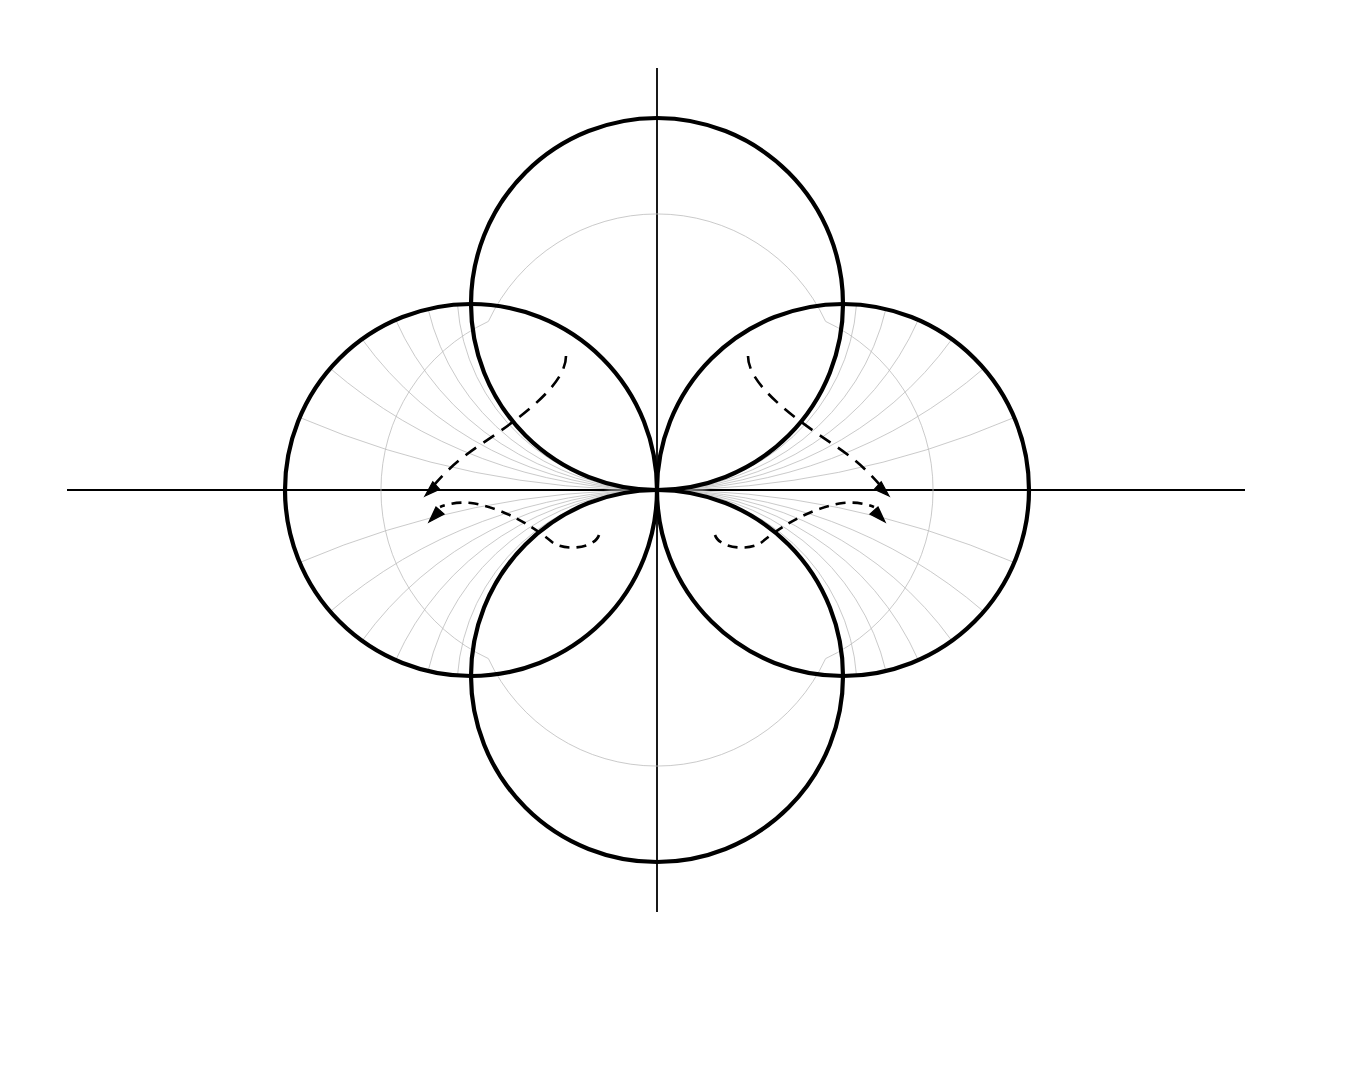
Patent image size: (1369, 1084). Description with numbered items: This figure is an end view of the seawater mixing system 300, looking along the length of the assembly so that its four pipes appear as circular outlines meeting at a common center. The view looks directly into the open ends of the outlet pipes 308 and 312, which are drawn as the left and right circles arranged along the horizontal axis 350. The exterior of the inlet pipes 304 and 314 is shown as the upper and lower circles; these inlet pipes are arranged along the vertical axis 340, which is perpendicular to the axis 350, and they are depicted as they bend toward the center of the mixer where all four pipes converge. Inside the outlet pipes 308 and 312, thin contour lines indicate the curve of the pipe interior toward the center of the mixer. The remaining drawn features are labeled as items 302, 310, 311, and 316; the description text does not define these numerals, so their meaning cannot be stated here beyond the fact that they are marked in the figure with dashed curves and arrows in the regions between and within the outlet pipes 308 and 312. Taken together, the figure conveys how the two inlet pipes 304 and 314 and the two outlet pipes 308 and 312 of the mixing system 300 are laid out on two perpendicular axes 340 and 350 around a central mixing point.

The seawater mixing system 300 is at (1334, 926).
The rotation direction 302 is at (567, 373).
The inlet pipe 304 is at (806, 189).
The outlet pipe 308 is at (997, 385).
The rotation direction 310 is at (886, 504).
The rotation direction 311 is at (428, 504).
The outlet pipe 312 is at (347, 352).
The inlet pipe 314 is at (797, 797).
The rotation path 316 is at (550, 543).
The axis 340 is at (657, 507).
The axis 350 is at (684, 492).